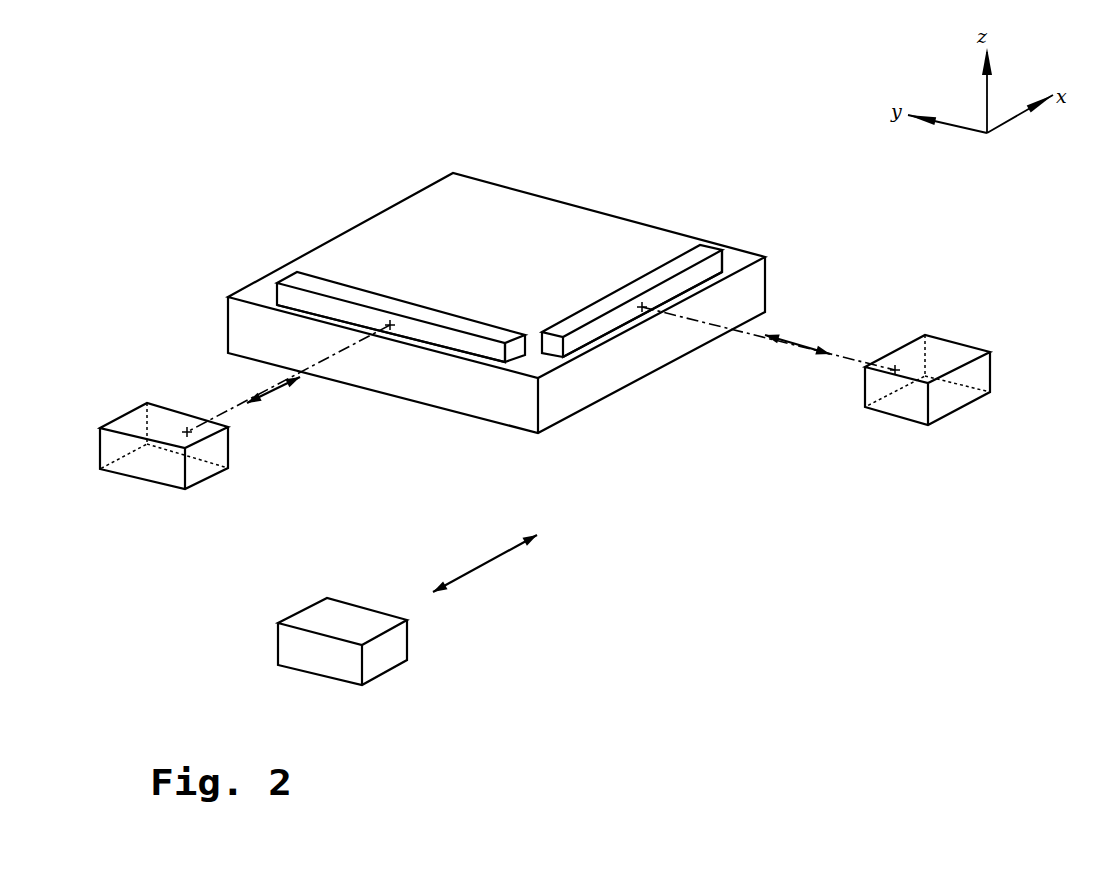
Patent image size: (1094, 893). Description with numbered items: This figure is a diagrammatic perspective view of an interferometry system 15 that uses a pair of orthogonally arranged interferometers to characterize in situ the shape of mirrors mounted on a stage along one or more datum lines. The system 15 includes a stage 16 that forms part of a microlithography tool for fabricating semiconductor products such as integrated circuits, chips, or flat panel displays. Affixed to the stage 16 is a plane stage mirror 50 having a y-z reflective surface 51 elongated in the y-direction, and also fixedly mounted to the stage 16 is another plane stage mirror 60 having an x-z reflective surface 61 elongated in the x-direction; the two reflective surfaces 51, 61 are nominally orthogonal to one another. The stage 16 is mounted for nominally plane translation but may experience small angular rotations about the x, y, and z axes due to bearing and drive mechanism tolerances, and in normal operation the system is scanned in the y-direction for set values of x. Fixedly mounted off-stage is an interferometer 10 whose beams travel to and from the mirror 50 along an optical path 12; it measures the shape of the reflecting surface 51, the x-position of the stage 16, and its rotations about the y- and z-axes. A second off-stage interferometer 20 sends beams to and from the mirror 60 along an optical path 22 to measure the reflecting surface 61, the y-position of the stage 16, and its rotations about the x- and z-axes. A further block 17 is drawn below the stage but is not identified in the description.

The interferometer 10 is at (200, 468).
The optical path 12 is at (273, 388).
The interferometry system 15 is at (574, 118).
The stage 16 is at (585, 222).
The drive unit / actuator 17 is at (378, 665).
The interferometer 20 is at (912, 407).
The optical path 22 is at (802, 345).
The plane stage mirror 50 is at (325, 292).
The y-z reflective surface 51 is at (453, 342).
The plane stage mirror 60 is at (683, 265).
The x-z reflective surface 61 is at (583, 338).